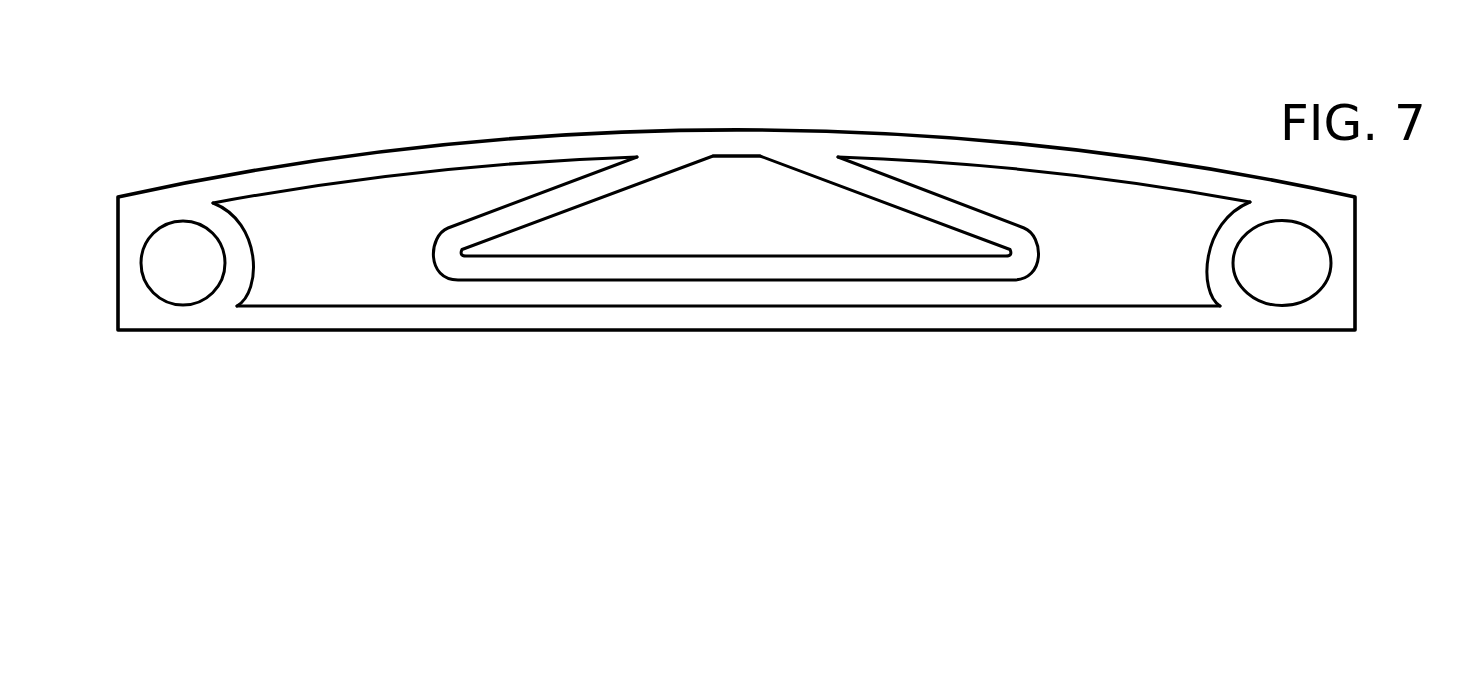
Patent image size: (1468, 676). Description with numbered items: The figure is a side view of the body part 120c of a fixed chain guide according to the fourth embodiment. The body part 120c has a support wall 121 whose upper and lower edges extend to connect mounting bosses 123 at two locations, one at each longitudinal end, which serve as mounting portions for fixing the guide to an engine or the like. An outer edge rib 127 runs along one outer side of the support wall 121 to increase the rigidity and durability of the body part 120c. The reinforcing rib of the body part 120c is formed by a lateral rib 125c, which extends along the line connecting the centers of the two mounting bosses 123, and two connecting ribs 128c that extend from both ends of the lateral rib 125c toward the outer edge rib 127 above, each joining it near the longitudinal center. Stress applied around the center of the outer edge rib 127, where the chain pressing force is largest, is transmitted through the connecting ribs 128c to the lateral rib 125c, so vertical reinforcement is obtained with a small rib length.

The body part 120c is at (293, 143).
The support wall 121 is at (620, 227).
The mounting boss 123 is at (240, 273).
The lateral rib 125c is at (710, 267).
The outer edge rib 127 is at (1035, 317).
The connecting rib 128c is at (530, 215).